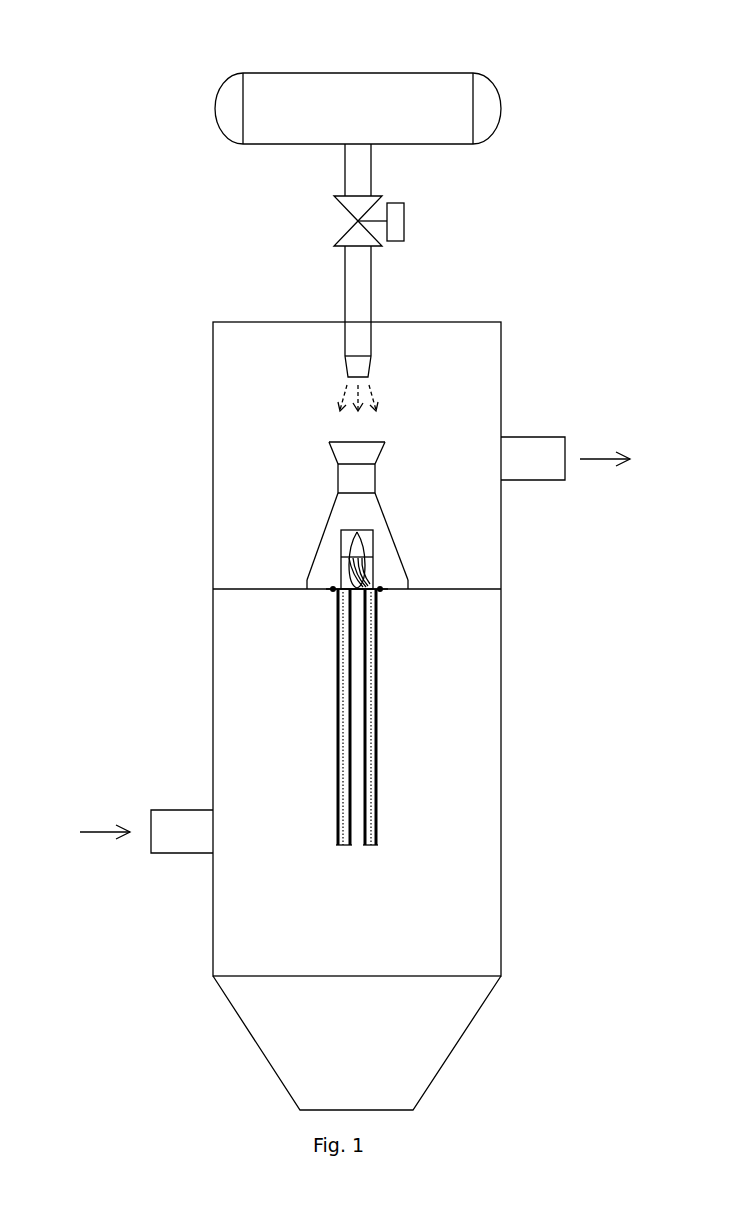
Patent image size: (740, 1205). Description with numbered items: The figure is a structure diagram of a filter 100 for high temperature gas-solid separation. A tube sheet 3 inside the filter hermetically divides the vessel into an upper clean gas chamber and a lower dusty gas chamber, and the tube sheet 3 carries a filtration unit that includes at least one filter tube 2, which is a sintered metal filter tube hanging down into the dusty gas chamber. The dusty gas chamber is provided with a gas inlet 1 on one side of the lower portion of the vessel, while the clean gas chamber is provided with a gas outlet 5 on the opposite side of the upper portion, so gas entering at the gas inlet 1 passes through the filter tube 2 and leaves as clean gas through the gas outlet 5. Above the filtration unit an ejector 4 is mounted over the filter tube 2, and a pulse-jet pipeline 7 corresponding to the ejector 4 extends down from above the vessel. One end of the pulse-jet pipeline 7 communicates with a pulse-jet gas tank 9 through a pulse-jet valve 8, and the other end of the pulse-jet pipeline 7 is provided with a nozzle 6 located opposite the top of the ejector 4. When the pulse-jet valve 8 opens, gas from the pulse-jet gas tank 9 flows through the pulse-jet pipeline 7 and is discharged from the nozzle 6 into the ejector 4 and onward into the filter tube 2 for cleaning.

The filter 100 is at (428, 563).
The gas inlet 1 is at (176, 823).
The filter tube 2 is at (375, 687).
The tube sheet 3 is at (250, 589).
The ejector 4 is at (353, 479).
The gas outlet 5 is at (535, 450).
The nozzle 6 is at (357, 367).
The pulse-jet pipeline 7 is at (358, 303).
The pulse-jet valve 8 is at (357, 206).
The pulse-jet gas tank 9 is at (287, 108).